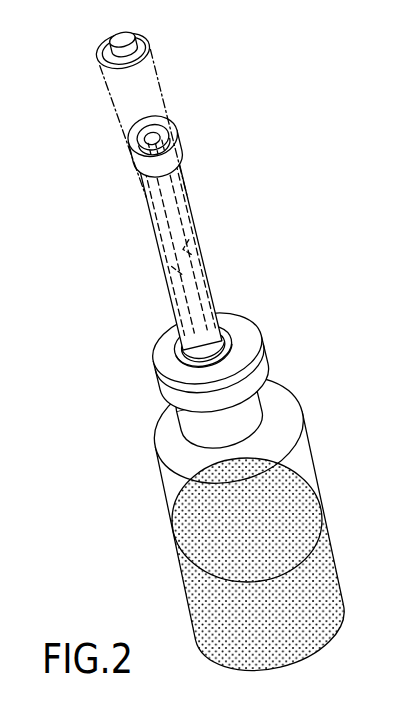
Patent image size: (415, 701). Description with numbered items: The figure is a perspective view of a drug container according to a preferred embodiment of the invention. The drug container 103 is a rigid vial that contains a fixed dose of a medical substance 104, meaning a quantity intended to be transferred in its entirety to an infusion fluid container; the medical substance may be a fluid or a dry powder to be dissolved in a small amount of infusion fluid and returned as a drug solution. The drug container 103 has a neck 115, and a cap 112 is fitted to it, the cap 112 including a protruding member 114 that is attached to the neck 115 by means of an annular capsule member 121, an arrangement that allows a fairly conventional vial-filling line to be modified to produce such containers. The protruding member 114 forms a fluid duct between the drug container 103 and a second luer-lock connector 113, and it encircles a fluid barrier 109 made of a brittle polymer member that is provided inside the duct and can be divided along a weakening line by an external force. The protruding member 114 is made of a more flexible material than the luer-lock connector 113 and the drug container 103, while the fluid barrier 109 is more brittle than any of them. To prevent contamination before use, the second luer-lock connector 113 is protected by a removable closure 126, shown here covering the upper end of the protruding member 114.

The drug container 103 is at (313, 405).
The medical substance 104 is at (233, 602).
The fluid barrier 109 is at (205, 252).
The cap 112 is at (243, 292).
The second luer-lock connector 113 is at (150, 118).
The protruding member 114 is at (193, 212).
The neck 115 is at (207, 422).
The annular capsule member 121 is at (167, 350).
The removable closure 126 is at (104, 44).